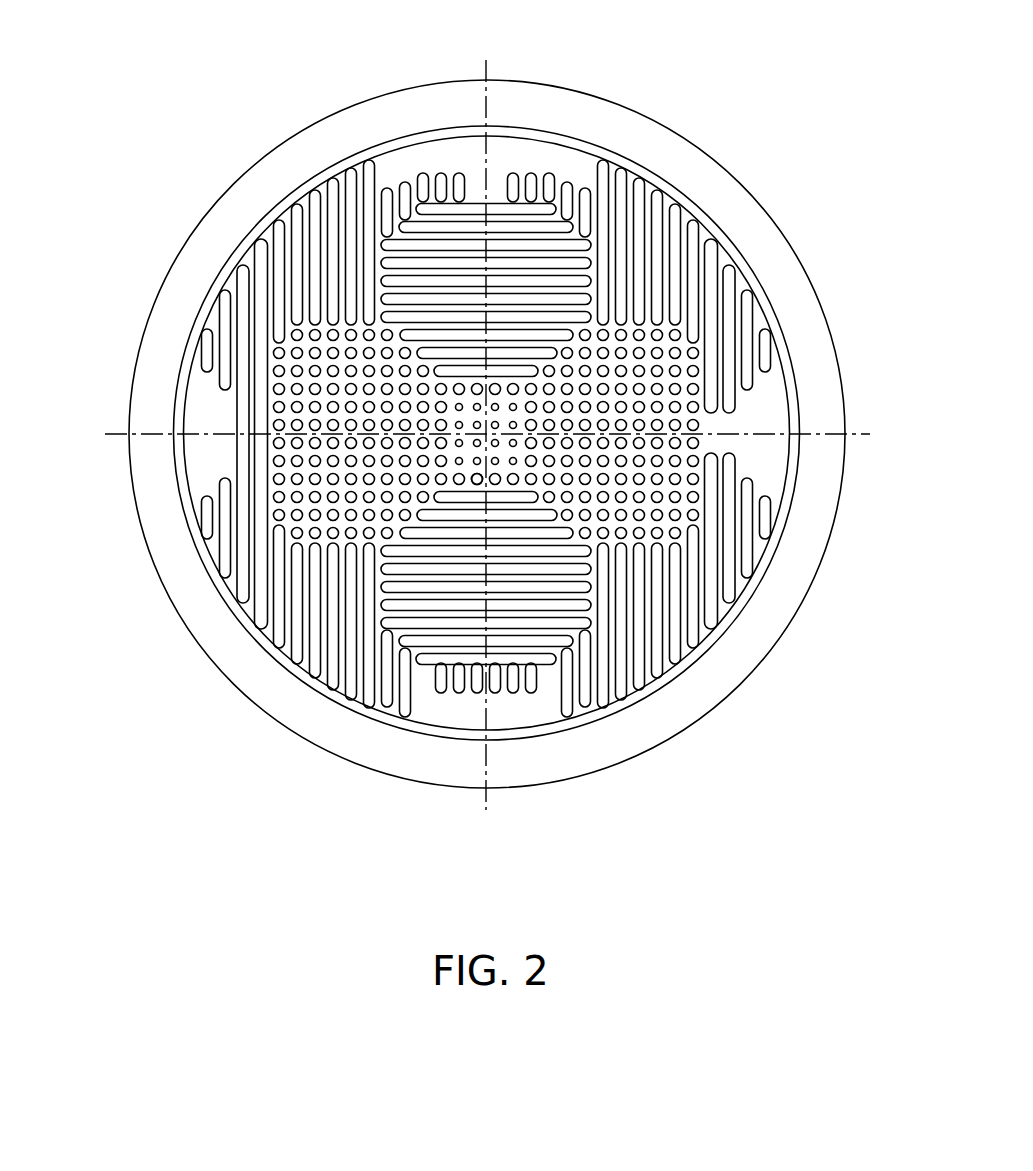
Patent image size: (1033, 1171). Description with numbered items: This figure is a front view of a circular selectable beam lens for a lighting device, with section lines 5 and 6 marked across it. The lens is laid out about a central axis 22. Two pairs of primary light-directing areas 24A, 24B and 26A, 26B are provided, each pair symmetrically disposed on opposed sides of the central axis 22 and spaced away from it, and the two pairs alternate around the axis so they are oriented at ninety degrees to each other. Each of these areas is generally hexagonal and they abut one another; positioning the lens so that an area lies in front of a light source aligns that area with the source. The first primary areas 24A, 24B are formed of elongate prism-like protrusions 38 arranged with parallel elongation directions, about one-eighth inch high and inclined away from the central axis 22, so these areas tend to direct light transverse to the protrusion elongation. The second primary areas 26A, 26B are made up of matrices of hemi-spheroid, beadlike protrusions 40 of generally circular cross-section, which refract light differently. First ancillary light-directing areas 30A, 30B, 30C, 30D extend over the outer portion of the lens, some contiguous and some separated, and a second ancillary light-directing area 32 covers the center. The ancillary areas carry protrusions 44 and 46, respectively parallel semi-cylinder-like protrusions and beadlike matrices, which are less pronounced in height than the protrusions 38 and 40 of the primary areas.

The section line 5- 5 is at (486, 60).
The section line 6- 6 is at (105, 434).
The central axis 22 is at (490, 437).
The first primary light-directing area 24A is at (551, 246).
The first primary light-directing area 24B is at (528, 628).
The second primary light-directing area 26A is at (293, 386).
The second primary light-directing area 26B is at (685, 387).
The first ancillary light-directing area 30A is at (680, 240).
The first ancillary light-directing area 30B is at (737, 556).
The first ancillary light-directing area 30C is at (313, 645).
The first ancillary light-directing area 30D is at (327, 223).
The second ancillary light-directing area 32 is at (462, 450).
The elongate prism-like protrusions 38 is at (436, 232).
The hemi-spheroid protrusions 40 is at (272, 443).
The semi cylinder-like protrusions 44 is at (268, 243).
The hemi-spheroid protrusions 46 is at (476, 484).